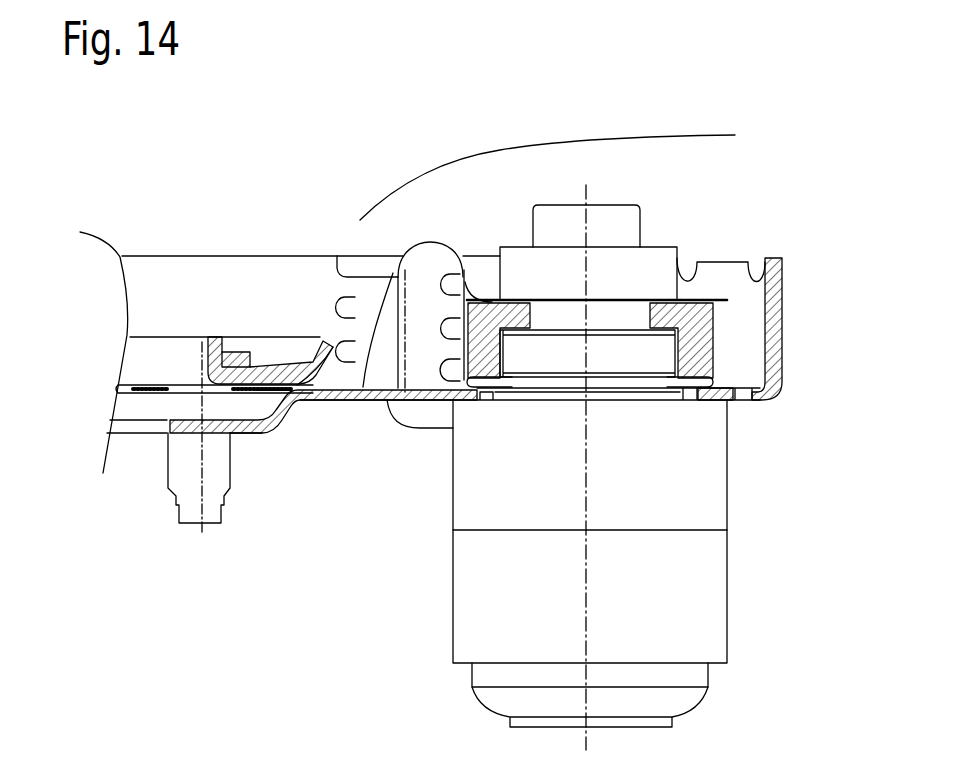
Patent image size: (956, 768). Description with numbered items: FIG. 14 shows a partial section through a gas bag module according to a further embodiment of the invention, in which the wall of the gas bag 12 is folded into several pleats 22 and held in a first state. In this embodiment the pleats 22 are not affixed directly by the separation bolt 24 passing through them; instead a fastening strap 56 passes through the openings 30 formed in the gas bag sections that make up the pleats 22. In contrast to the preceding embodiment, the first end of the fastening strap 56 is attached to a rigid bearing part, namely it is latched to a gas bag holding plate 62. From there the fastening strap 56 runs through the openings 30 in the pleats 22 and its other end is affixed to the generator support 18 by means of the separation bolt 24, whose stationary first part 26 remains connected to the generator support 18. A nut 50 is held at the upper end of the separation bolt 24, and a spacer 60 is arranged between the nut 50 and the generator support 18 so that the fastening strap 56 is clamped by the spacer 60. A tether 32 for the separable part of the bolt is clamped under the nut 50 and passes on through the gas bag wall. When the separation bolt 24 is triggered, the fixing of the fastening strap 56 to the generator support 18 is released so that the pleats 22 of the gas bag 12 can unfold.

The gas bag 12 is at (578, 141).
The generator support 18 is at (782, 342).
The pleats 22 is at (325, 331).
The separation bolt 24 is at (740, 570).
The first part 26 is at (698, 495).
The openings 30 is at (376, 290).
The tether 32 is at (467, 278).
The nut 50 is at (653, 262).
The fastening strap 56 is at (713, 382).
The spacer 60 is at (693, 325).
The gas bag holding plate 62 is at (213, 344).